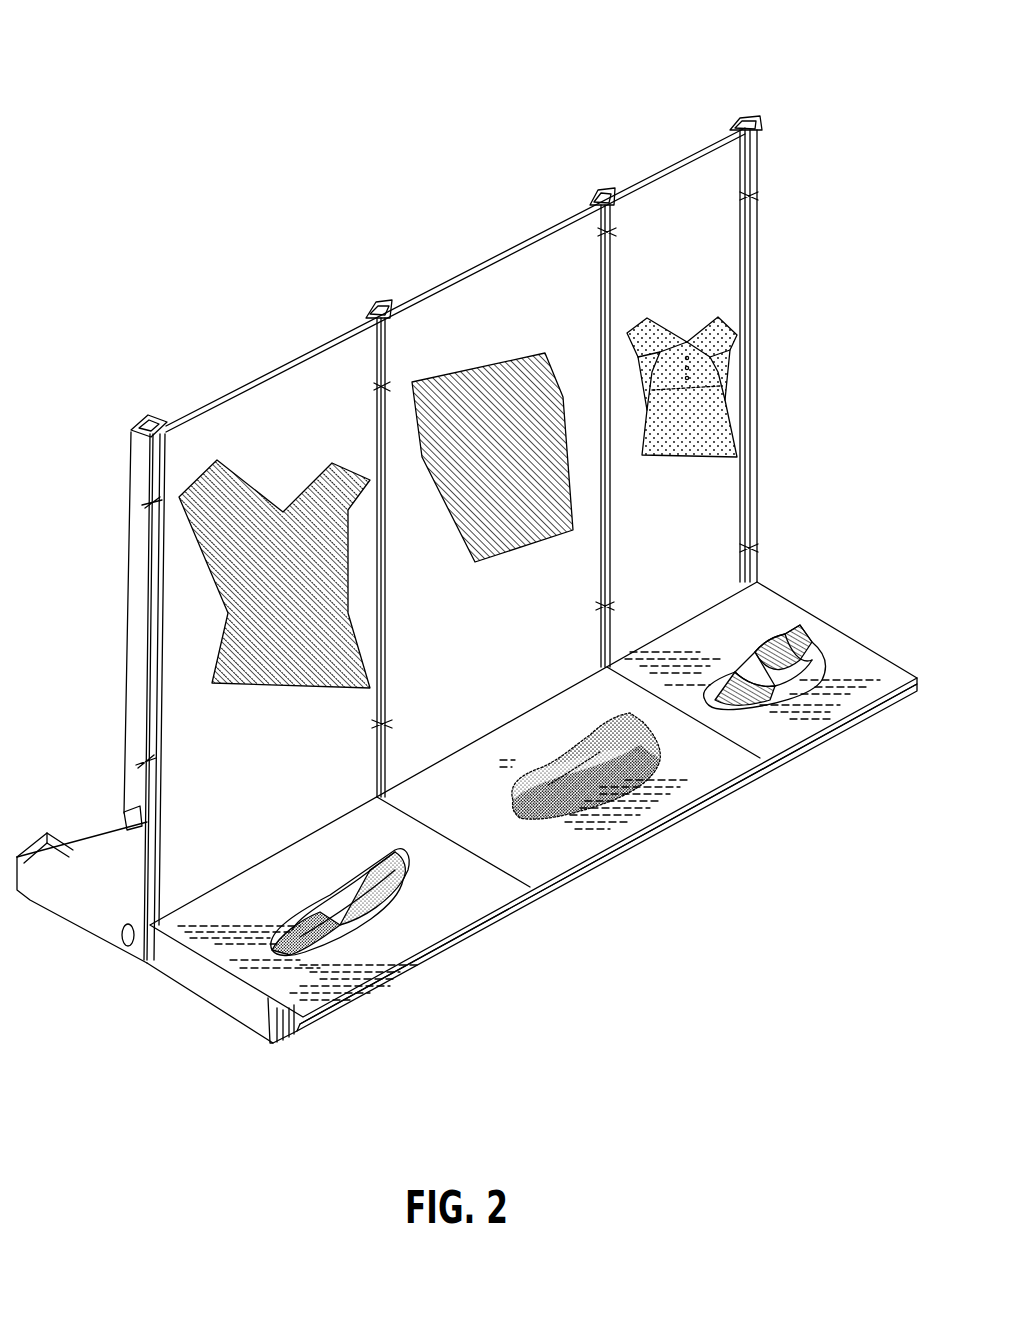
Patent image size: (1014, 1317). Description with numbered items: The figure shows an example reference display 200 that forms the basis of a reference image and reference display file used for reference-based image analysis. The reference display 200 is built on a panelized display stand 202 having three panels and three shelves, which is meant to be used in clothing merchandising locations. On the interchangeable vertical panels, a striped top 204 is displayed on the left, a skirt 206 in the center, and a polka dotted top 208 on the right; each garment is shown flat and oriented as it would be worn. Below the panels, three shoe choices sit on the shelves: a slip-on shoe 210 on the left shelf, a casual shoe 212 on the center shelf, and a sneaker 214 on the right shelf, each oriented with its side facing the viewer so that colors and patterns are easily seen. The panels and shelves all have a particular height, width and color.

The reference display 200 is at (44, 66).
The panelized display stand 202 is at (372, 308).
The striped top 204 is at (253, 683).
The skirt 206 is at (513, 552).
The polka dotted top 208 is at (655, 457).
The slip-on shoe 210 is at (412, 855).
The casual shoe 212 is at (637, 718).
The sneaker 214 is at (787, 633).